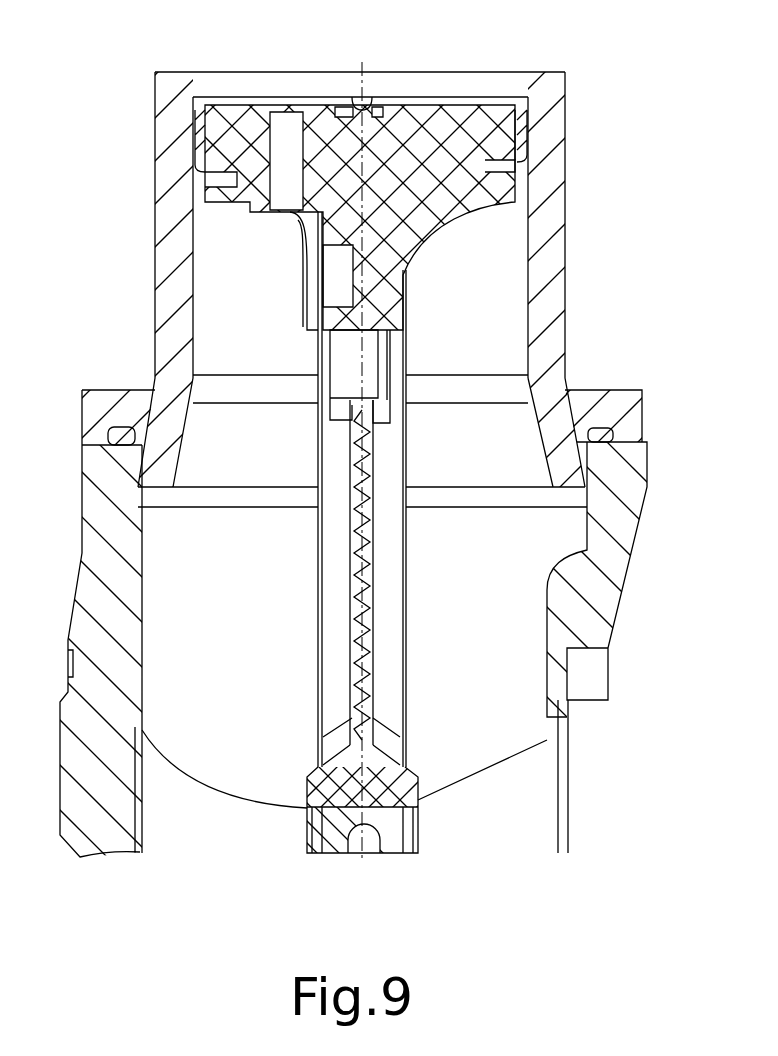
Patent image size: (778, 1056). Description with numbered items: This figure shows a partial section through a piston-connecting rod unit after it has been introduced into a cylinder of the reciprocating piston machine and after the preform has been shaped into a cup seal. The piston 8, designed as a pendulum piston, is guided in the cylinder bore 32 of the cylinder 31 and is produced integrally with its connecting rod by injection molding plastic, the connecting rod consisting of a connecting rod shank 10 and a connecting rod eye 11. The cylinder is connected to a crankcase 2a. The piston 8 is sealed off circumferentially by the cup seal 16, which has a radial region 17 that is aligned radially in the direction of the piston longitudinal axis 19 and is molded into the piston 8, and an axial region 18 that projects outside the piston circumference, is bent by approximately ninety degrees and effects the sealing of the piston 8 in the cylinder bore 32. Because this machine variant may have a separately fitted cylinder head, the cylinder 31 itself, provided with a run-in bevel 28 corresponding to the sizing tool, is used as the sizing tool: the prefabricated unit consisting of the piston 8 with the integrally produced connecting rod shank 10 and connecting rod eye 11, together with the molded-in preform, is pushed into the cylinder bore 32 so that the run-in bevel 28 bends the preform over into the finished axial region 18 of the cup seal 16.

The crankcase 2a is at (600, 613).
The piston 8 is at (222, 183).
The connecting rod shank 10 is at (372, 697).
The connecting rod eye 11 is at (390, 795).
The cup seal 16 is at (545, 155).
The radial region 17 is at (493, 177).
The axial region 18 is at (523, 137).
The piston longitudinal axis 19 is at (362, 90).
The run-in bevel 28 is at (200, 88).
The cylinder 31 is at (555, 235).
The cylinder bore 32 is at (525, 268).